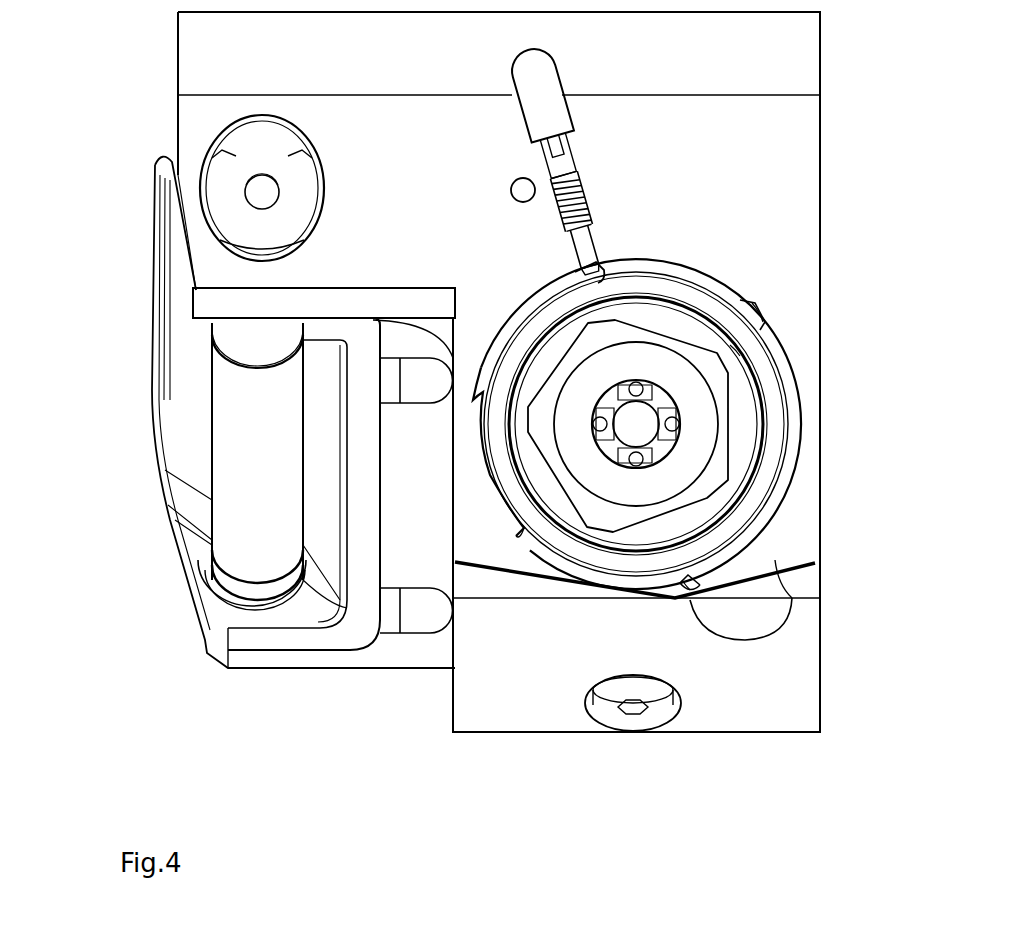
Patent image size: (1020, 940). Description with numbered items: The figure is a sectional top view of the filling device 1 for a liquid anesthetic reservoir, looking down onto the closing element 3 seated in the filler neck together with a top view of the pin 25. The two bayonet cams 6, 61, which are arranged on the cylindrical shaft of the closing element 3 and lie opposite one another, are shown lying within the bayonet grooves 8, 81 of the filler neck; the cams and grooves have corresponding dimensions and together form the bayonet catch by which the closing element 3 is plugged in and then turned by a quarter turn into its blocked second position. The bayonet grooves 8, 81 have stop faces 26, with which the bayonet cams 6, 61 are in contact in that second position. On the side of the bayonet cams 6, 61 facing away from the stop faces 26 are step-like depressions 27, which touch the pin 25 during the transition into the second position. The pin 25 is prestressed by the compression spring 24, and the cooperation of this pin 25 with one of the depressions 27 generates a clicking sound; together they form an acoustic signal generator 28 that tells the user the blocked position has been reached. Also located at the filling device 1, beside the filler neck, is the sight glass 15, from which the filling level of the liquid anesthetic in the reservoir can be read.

The filling device 1 is at (110, 115).
The closing element 3 is at (673, 457).
The bayonet cam 6 is at (678, 290).
The bayonet groove 8 is at (555, 300).
The sight glass 15 is at (242, 425).
The compression spring 24 is at (583, 200).
The pin 25 is at (596, 247).
The stop face 26 is at (748, 313).
The step-like depression 27 is at (735, 345).
The acoustic signal generator 28 is at (618, 145).
The bayonet cam 61 is at (612, 567).
The bayonet groove 81 is at (760, 520).